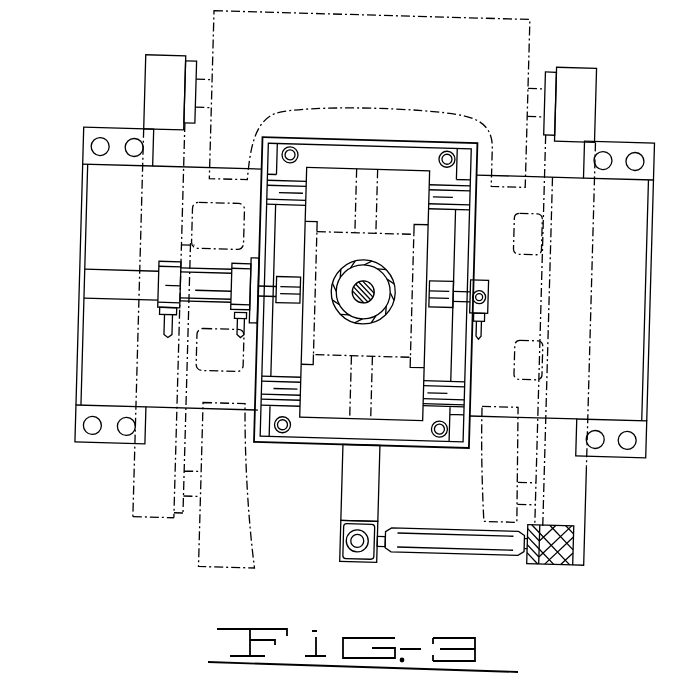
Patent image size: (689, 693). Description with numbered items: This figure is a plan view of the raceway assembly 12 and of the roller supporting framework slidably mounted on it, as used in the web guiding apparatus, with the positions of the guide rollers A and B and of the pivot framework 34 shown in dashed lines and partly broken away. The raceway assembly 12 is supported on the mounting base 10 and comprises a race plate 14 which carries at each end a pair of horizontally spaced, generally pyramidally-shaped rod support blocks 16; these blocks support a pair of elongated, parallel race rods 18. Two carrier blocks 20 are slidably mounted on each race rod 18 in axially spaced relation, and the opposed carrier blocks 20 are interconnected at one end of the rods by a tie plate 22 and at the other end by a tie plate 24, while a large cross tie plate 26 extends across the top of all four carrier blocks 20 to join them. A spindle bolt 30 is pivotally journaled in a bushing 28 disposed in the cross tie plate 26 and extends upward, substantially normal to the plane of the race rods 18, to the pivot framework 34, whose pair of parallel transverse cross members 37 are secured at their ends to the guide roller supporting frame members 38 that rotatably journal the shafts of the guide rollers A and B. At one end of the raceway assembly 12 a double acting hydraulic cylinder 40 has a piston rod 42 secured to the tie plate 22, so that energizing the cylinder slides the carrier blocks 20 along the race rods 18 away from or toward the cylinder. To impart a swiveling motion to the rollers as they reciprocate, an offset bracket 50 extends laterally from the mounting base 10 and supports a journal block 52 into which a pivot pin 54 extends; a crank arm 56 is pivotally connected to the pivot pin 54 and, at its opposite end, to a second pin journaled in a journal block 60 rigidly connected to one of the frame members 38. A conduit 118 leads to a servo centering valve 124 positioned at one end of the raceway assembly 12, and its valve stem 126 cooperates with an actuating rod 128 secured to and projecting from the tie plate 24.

The mounting base 10 is at (78, 282).
The raceway assembly 12 is at (257, 202).
The race plate 14 is at (417, 439).
The rod support blocks 16 is at (272, 210).
The race rods 18 is at (285, 194).
The carrier blocks 20 is at (335, 186).
The tie plate 22 is at (312, 274).
The tie plate 24 is at (417, 222).
The cross tie plate 26 is at (385, 255).
The bushing 28 is at (388, 307).
The spindle bolt 30 is at (370, 283).
The pivot framework 34 is at (137, 101).
The transverse cross members 37 is at (206, 221).
The guide roller supporting frame members 38 is at (570, 90).
The double acting hydraulic cylinder 40 is at (199, 282).
The piston rod 42 is at (288, 302).
The offset bracket 50 is at (355, 477).
The journal block 52 is at (389, 521).
The pivot pin 54 is at (360, 542).
The crank arm 56 is at (437, 545).
The journal block 60 is at (555, 561).
The conduit 118 is at (484, 325).
The servo centering valve 124 is at (477, 279).
The valve stem 126 is at (485, 294).
The actuating rod 128 is at (441, 288).
The guide roller A is at (224, 544).
The guide roller B is at (203, 28).